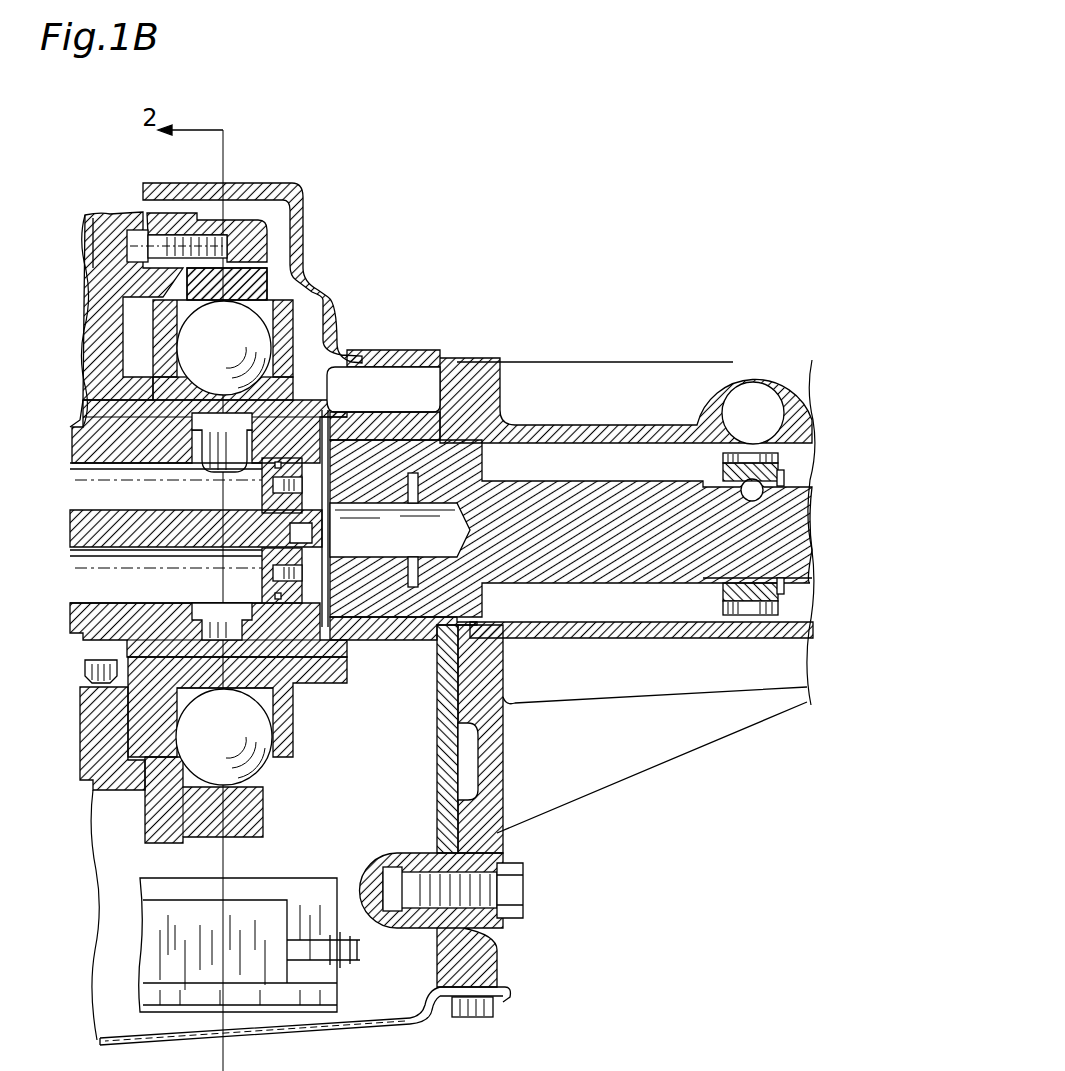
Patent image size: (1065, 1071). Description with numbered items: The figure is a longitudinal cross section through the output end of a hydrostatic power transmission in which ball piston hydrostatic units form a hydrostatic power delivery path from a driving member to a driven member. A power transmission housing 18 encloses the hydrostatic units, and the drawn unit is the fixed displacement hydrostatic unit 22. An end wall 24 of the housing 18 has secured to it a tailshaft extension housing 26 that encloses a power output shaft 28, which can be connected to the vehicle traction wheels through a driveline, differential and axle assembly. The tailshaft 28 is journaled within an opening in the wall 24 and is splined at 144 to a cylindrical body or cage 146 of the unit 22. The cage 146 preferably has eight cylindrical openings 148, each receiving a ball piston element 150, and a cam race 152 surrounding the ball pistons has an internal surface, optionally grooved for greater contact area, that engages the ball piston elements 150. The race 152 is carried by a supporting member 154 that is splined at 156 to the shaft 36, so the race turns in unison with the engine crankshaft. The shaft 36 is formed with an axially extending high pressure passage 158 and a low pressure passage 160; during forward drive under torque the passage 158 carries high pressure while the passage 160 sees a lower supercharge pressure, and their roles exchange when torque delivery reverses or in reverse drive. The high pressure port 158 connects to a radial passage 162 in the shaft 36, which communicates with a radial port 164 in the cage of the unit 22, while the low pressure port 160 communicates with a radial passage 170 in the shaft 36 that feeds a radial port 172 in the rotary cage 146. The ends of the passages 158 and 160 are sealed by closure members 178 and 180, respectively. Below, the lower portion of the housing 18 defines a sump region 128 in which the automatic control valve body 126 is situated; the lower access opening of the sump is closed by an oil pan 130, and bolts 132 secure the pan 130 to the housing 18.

The power transmission housing 18 is at (268, 185).
The hydrostatic unit 22 is at (267, 300).
The end wall 24 is at (473, 770).
The tailshaft extension housing 26 is at (545, 422).
The power output shaft 28 is at (598, 483).
The shaft 36 is at (77, 530).
The automatic control valve body 126 is at (152, 968).
The sump region 128 is at (396, 1000).
The oil pan 130 is at (320, 1025).
The bolts 132 is at (476, 1020).
The spline 144 is at (345, 615).
The cylindrical body or cage 146 is at (330, 378).
The cylindrical openings 148 is at (272, 704).
The ball piston element 150 is at (255, 765).
The cam race 152 is at (255, 824).
The supporting member 154 is at (92, 782).
The spline 156 is at (100, 666).
The high pressure passage 158 is at (85, 510).
The low pressure passage 160 is at (83, 598).
The radial passage 162 is at (203, 463).
The radial port 164 is at (222, 398).
The radial passage 170 is at (200, 594).
The radial port 172 is at (233, 684).
The closure member 178 is at (262, 505).
The closure member 180 is at (262, 582).